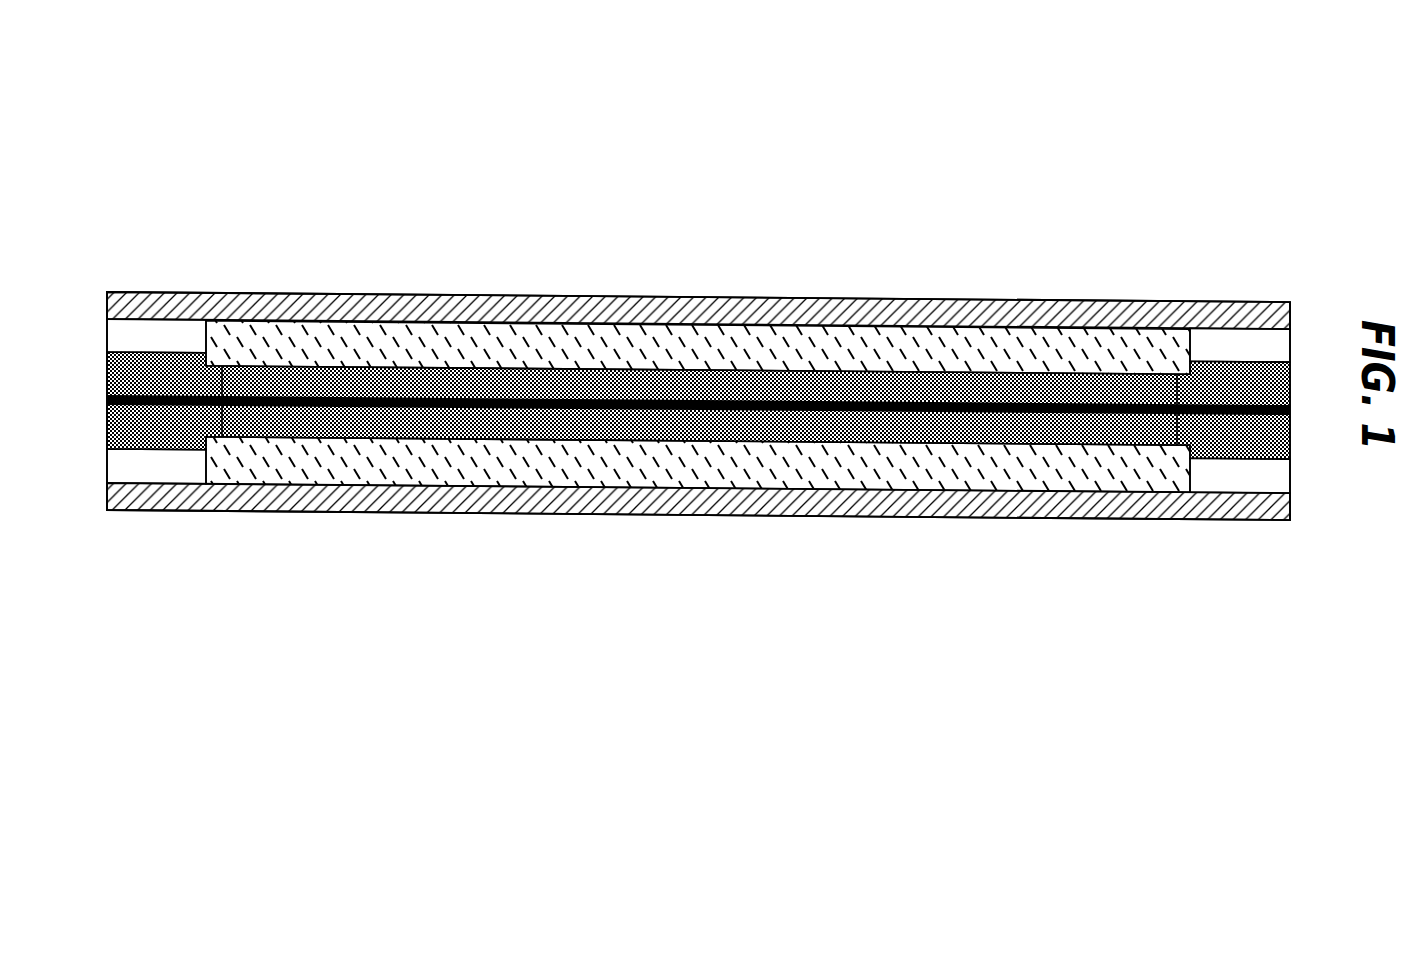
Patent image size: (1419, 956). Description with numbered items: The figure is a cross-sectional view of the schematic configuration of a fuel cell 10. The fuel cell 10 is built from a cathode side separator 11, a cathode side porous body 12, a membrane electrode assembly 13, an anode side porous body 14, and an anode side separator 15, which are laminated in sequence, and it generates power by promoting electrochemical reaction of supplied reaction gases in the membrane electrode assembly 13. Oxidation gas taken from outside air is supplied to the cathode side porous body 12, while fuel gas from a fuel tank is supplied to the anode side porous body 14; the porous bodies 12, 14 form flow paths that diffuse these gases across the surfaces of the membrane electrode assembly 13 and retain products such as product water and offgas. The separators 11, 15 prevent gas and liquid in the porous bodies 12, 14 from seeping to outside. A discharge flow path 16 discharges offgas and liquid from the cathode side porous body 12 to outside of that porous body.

The fuel cell 10 is at (718, 394).
The cathode side separator 11 is at (503, 297).
The cathode side porous body 12 is at (648, 297).
The membrane electrode assembly 13 is at (987, 397).
The anode side porous body 14 is at (523, 463).
The anode side separator 15 is at (673, 515).
The discharge flow path 16 is at (140, 333).